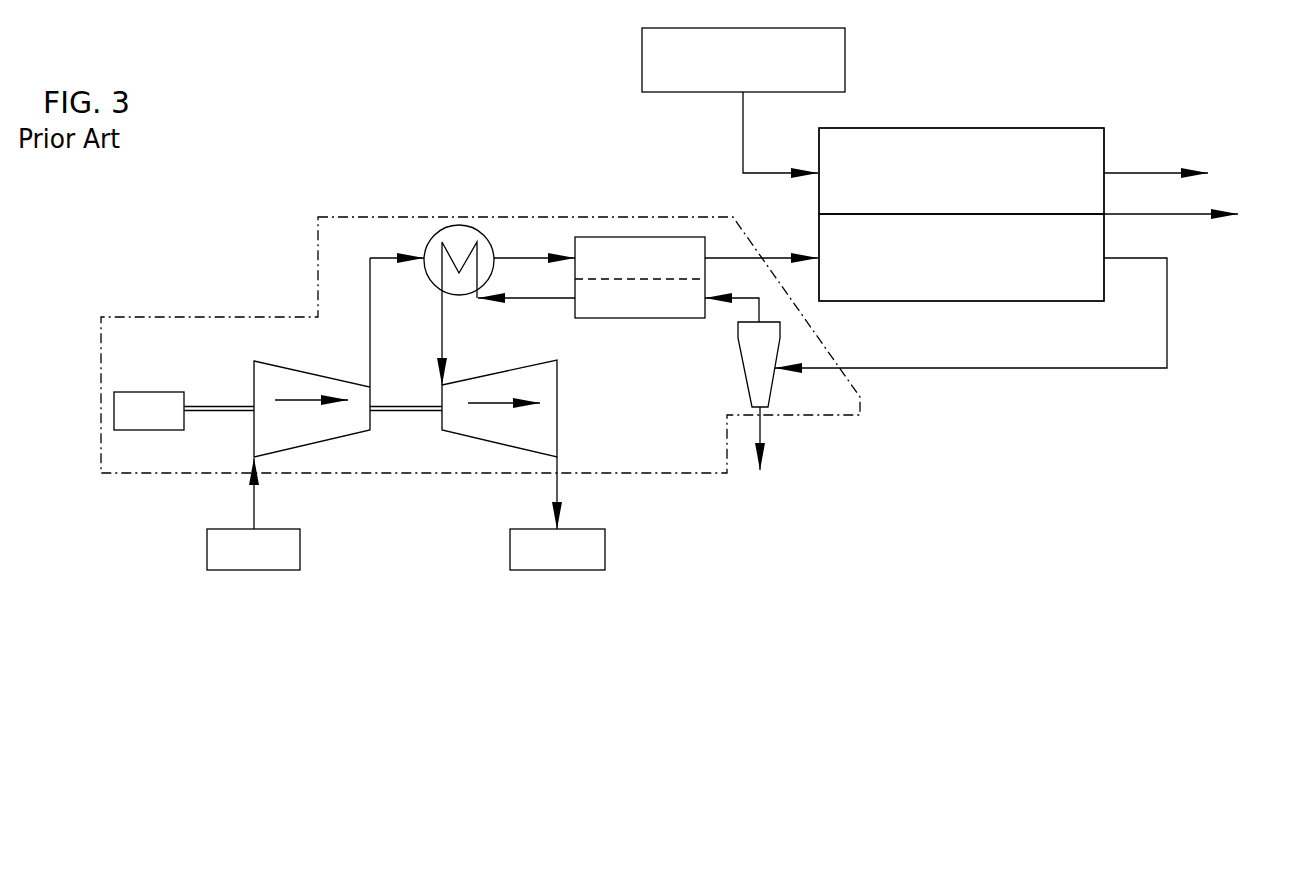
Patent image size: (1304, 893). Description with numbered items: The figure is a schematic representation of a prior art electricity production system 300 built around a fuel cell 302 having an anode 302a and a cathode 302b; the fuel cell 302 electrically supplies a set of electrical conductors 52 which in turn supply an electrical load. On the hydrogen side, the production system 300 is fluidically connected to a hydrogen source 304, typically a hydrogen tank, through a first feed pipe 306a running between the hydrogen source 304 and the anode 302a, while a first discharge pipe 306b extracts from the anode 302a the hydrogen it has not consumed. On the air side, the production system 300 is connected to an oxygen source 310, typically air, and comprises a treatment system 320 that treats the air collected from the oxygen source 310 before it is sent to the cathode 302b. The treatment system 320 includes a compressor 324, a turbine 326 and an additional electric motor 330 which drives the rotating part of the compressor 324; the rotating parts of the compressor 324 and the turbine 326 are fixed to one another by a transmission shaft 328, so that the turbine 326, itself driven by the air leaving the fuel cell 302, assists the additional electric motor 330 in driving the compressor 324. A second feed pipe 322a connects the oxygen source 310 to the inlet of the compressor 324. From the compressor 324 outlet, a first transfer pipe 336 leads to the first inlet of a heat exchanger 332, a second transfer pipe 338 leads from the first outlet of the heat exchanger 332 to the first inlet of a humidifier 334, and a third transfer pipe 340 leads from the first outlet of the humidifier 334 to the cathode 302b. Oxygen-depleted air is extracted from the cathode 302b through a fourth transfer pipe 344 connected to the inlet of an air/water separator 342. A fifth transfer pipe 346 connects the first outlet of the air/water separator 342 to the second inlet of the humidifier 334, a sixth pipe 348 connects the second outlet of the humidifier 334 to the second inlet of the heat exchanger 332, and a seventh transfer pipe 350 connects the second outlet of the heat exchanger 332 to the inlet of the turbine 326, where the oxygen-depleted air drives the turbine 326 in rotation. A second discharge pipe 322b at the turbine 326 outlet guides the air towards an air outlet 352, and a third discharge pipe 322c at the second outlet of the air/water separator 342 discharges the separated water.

The electricity production system 300 is at (960, 200).
The fuel cell 302 is at (1005, 175).
The anode 302a is at (971, 177).
The cathode 302b is at (965, 266).
The hydrogen source 304 is at (720, 72).
The first feed pipe 306a is at (740, 117).
The first discharge pipe 306b is at (1165, 170).
The set of electrical conductors 52 is at (1193, 212).
The oxygen source 310 is at (277, 563).
The treatment system 320 is at (318, 217).
The second feed pipe 322a is at (253, 512).
The second discharge pipe 322b is at (558, 485).
The third discharge pipe 322c is at (762, 432).
The compressor 324 is at (307, 441).
The turbine 326 is at (551, 441).
The transmission shaft 328 is at (413, 410).
The additional electric motor 330 is at (168, 426).
The heat exchanger 332 is at (452, 233).
The humidifier 334 is at (666, 271).
The first transfer pipe 336 is at (370, 278).
The second transfer pipe 338 is at (518, 258).
The third transfer pipe 340 is at (727, 258).
The air/water separator 342 is at (755, 372).
The fourth transfer pipe 344 is at (1167, 313).
The fifth transfer pipe 346 is at (760, 310).
The sixth pipe 348 is at (545, 300).
The seventh transfer pipe 350 is at (442, 347).
The air outlet 352 is at (582, 563).